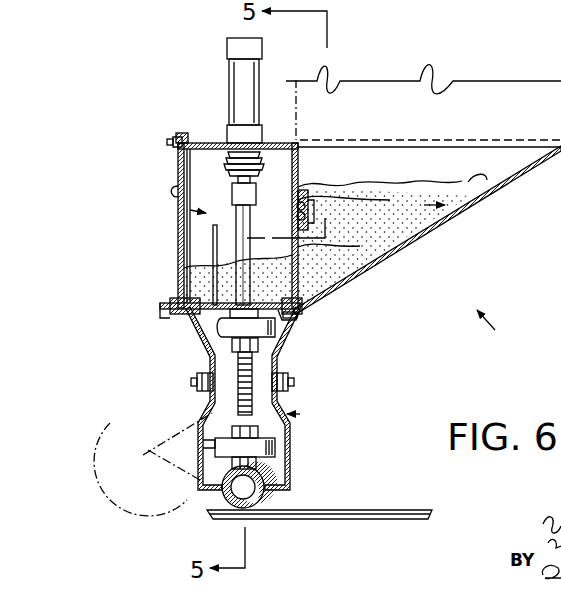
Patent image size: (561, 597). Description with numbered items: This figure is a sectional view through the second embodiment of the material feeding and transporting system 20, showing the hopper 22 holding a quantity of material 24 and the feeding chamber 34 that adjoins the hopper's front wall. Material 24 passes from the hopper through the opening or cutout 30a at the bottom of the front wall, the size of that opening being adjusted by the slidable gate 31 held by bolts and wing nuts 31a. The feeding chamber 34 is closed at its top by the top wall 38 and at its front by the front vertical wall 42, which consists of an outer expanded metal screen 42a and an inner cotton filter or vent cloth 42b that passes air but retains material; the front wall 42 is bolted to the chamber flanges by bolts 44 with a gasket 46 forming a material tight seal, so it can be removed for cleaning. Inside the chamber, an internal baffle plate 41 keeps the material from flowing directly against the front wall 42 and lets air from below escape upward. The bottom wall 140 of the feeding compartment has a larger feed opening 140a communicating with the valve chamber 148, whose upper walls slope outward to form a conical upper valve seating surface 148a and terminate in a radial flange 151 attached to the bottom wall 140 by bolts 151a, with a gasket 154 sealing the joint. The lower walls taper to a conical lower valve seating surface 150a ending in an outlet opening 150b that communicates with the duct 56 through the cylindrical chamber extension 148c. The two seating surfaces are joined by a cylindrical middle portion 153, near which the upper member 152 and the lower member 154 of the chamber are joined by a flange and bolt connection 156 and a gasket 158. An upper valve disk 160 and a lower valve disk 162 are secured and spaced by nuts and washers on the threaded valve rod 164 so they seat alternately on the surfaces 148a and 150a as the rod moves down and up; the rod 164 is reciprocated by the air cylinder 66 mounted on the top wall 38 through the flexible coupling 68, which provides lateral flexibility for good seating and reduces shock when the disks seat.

The material feeding and transporting system 20 is at (501, 334).
The hopper 22 is at (478, 205).
The material 24 is at (487, 180).
The opening or cutout 30a is at (310, 205).
The slidable gate 31 is at (325, 238).
The bolts and wing nuts 31a is at (412, 198).
The feeding chamber 34 is at (190, 210).
The top wall 38 is at (205, 143).
The internal baffle plate 41 is at (213, 255).
The front vertical wall 42 is at (178, 178).
The outer expanded metal screen 42a is at (178, 160).
The inner cotton filter or vent cloth 42b is at (178, 195).
The bolts 44 is at (176, 138).
The gasket 46 is at (180, 137).
The duct 56 is at (265, 495).
The air cylinder 66 is at (254, 89).
The flexible coupling 68 is at (262, 165).
The bottom wall 140 is at (200, 303).
The feed opening 140a is at (300, 304).
The valve chamber 148 is at (290, 417).
The upper valve seating surface 148a is at (270, 338).
The cylindrical chamber extension 148c is at (287, 467).
The lower valve seating surface 150a is at (285, 420).
The outlet opening 150b is at (282, 445).
The radial flange 151 is at (297, 315).
The bolts 151a is at (300, 328).
The upper member 152 is at (230, 318).
The cylindrical middle portion 153 is at (288, 375).
The gasket 154 is at (200, 395).
The flange and bolt connection 156 is at (290, 384).
The gasket 158 is at (307, 405).
The upper valve disk 160 is at (222, 328).
The lower valve disk 162 is at (222, 447).
The threaded valve rod 164 is at (238, 380).